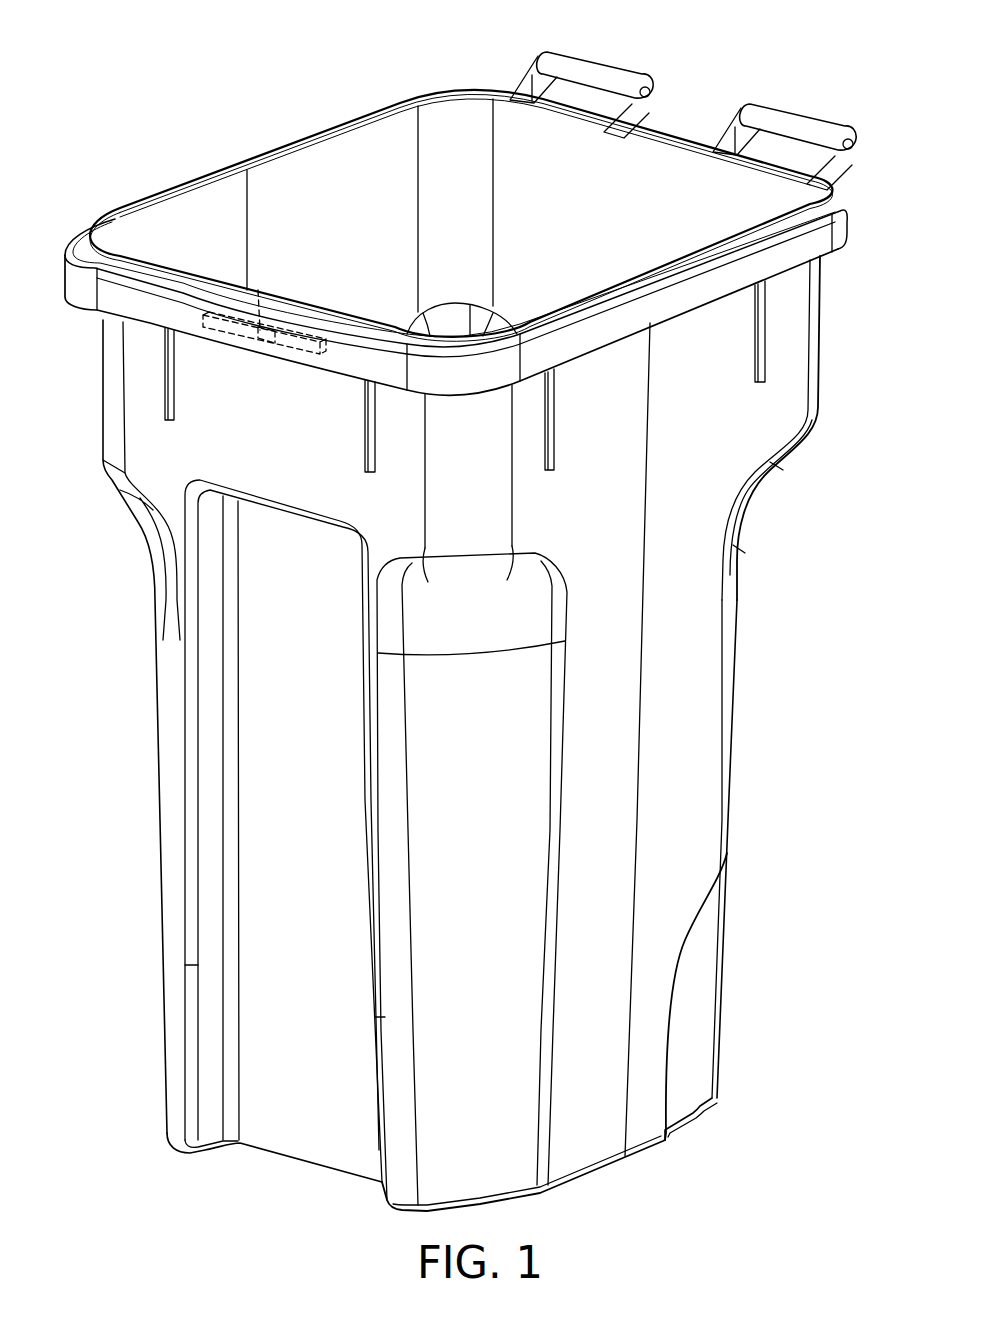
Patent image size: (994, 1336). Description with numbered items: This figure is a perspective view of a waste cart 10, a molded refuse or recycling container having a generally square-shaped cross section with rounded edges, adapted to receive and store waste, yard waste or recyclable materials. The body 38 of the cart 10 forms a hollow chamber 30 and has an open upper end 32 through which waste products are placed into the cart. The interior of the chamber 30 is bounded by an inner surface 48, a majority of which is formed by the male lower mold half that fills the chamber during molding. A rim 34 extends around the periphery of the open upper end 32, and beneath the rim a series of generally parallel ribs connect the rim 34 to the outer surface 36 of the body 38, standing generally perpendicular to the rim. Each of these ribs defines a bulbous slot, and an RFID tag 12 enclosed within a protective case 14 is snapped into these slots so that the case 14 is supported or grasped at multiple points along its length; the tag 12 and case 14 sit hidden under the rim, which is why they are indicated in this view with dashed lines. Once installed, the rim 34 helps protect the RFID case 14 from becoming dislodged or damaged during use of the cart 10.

The waste cart 10 is at (214, 117).
The RFID tag 12 is at (258, 290).
The case 14 is at (203, 330).
The hollow chamber 30 is at (370, 223).
The open upper end 32 is at (457, 90).
The rim 34 is at (847, 220).
The outer surface 36 is at (680, 706).
The body 38 is at (823, 337).
The inner surface 48 is at (690, 170).